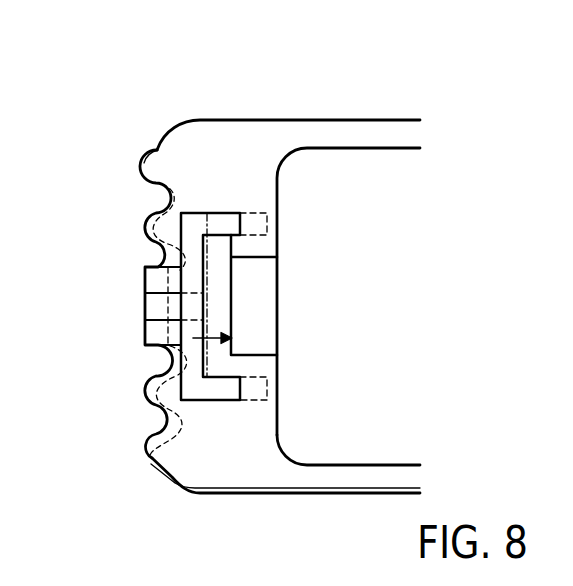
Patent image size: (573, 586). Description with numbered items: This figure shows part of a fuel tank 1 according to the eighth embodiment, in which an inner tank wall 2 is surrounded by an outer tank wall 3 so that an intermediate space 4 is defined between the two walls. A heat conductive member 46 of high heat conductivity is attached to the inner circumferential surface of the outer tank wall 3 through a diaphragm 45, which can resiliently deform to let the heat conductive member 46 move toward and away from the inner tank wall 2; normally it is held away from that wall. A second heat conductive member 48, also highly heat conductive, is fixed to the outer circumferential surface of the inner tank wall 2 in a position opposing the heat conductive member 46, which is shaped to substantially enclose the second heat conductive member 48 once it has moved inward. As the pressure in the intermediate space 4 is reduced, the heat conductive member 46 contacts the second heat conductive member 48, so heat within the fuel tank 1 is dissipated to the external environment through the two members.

The fuel tank 1 is at (146, 111).
The inner tank wall 2 is at (375, 150).
The outer tank wall 3 is at (345, 118).
The intermediate space 4 is at (360, 474).
The diaphragm 45 is at (140, 220).
The heat conductive member 46 is at (157, 306).
The second heat conductive member 48 is at (263, 303).